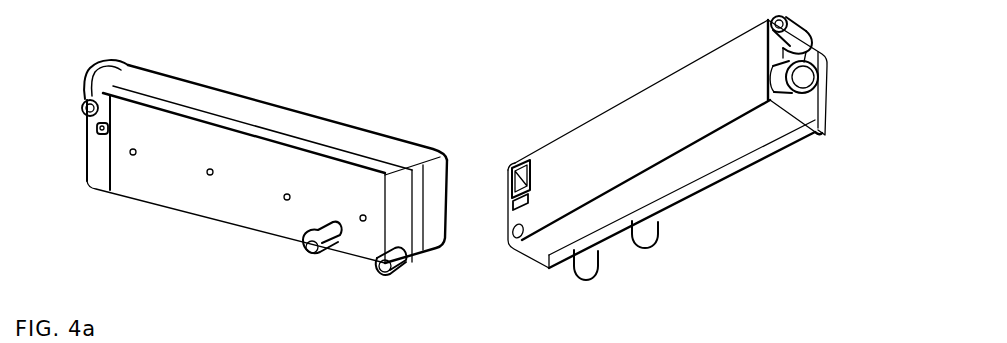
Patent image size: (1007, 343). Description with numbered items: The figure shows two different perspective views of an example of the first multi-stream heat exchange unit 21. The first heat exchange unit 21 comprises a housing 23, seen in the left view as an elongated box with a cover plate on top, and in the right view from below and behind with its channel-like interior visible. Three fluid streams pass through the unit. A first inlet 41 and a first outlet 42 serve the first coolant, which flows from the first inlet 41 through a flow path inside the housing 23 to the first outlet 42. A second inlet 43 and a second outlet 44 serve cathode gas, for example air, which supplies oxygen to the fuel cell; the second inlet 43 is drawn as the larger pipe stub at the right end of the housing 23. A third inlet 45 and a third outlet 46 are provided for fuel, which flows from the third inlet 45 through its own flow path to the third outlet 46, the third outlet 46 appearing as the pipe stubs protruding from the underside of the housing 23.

The first heat exchange unit 21 is at (338, 120).
The housing 23 is at (265, 115).
The third inlet 45 is at (104, 128).
The third outlet 46 is at (305, 251).
The first inlet 41 is at (515, 200).
The first outlet 42 is at (794, 17).
The second inlet 43 is at (812, 80).
The second outlet 44 is at (520, 167).